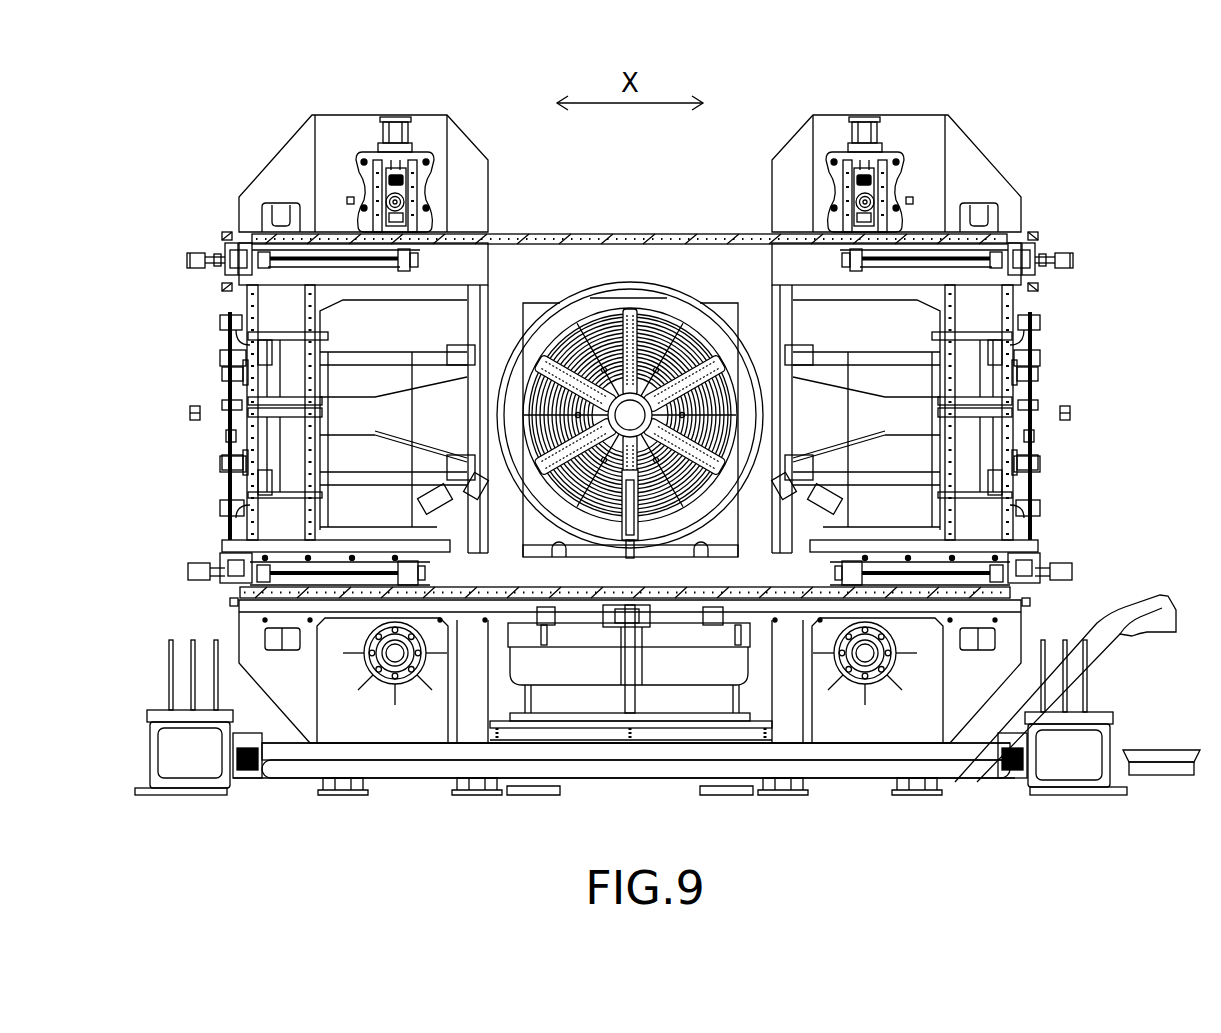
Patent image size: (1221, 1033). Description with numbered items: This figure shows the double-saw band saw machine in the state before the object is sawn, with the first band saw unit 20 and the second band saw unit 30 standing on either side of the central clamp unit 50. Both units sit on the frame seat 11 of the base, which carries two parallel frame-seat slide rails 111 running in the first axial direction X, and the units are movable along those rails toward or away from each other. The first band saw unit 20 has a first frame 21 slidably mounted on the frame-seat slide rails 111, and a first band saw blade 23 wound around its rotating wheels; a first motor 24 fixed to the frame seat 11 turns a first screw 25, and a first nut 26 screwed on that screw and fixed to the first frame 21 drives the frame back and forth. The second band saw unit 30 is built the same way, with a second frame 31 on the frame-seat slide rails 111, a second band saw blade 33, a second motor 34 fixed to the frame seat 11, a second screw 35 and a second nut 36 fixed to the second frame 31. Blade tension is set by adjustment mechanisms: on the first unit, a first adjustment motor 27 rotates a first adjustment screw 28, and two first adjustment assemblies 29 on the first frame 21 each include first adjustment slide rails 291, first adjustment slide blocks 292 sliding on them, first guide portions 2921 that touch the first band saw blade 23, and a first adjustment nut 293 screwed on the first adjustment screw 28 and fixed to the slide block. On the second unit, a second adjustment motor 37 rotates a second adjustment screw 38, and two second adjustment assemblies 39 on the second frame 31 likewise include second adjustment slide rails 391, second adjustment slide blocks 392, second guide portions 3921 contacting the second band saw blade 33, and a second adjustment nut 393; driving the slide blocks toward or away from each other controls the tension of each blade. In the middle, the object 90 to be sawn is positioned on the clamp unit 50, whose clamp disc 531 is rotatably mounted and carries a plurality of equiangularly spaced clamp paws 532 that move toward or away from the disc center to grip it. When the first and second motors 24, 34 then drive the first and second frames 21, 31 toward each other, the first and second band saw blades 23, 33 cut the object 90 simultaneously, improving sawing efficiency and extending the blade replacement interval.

The frame seat 11 is at (268, 665).
The first band saw unit 20 is at (918, 143).
The first frame 21 is at (916, 132).
The first band saw blade 23 is at (755, 308).
The first motor 24 is at (1065, 246).
The first screw 25 is at (917, 256).
The first nut 26 is at (1009, 248).
The first adjustment motor 27 is at (1032, 566).
The first adjustment screw 28 is at (1032, 492).
The first adjustment assembly 29 is at (816, 288).
The second band saw unit 30 is at (340, 143).
The second frame 31 is at (346, 132).
The second band saw blade 33 is at (506, 308).
The second motor 34 is at (197, 246).
The second screw 35 is at (343, 256).
The second nut 36 is at (253, 248).
The second adjustment motor 37 is at (225, 566).
The second adjustment screw 38 is at (232, 492).
The second adjustment assembly 39 is at (444, 288).
The clamp unit 50 is at (630, 487).
The object to be sawn 90 is at (660, 292).
The frame-seat slide rail 111 is at (708, 238).
The first adjustment slide rail 291 is at (1014, 299).
The first adjustment slide block 292 is at (1010, 392).
The first guide portion 2921 is at (798, 375).
The first adjustment nut 293 is at (1016, 356).
The second adjustment slide rail 391 is at (248, 299).
The second adjustment slide block 392 is at (348, 377).
The second guide portion 3921 is at (462, 375).
The second adjustment nut 393 is at (245, 356).
The clamp disc 531 is at (586, 305).
The clamp paw 532 is at (640, 530).